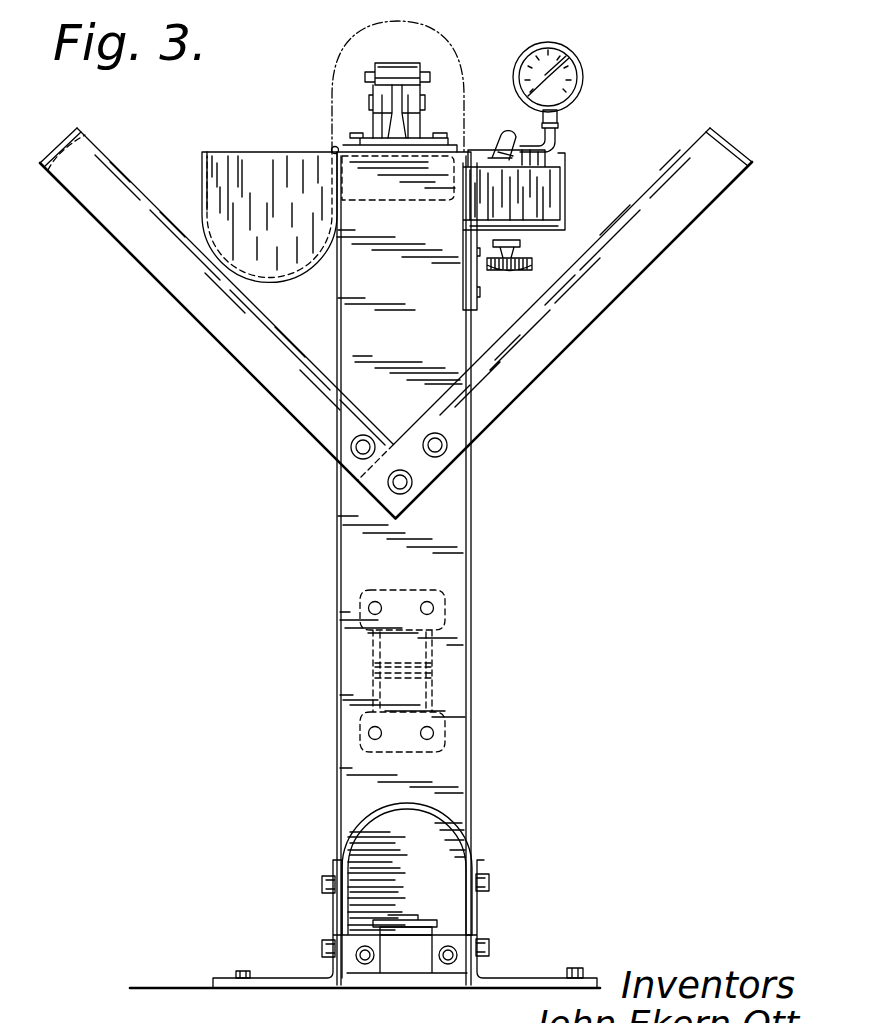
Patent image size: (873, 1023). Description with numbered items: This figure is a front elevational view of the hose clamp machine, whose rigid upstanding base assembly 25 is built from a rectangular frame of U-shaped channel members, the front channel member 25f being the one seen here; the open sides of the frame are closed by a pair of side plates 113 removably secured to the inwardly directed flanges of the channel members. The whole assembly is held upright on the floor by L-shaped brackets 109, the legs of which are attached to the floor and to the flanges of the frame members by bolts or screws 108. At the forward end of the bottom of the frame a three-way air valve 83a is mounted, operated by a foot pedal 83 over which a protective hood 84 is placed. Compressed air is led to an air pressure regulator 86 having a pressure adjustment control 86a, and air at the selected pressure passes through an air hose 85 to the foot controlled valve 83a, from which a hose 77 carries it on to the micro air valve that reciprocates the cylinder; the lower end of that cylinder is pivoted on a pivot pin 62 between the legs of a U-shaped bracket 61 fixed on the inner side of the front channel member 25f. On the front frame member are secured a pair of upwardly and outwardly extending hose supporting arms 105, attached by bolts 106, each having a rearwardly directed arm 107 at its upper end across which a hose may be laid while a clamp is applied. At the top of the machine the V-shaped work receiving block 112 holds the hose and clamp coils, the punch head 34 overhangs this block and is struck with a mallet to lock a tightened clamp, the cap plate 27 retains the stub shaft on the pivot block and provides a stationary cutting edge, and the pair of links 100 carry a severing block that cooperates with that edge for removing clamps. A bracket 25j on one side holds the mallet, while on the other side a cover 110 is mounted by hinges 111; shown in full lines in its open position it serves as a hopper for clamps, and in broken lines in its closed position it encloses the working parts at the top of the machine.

The base assembly 25 is at (474, 520).
The front channel member 25f is at (424, 343).
The bracket 25j is at (563, 198).
The cap plate 27 is at (410, 50).
The punch head 34 is at (397, 98).
The U-shaped bracket 61 is at (445, 690).
The pivot pin 62 is at (414, 666).
The hose 77 is at (455, 960).
The foot pedal 83 is at (416, 919).
The three-way air valve 83a is at (409, 972).
The protective hood 84 is at (363, 822).
The air hose 85 is at (366, 966).
The air pressure regulator 86 is at (566, 121).
The pressure adjustment control 86a is at (518, 244).
The links 100 is at (368, 62).
The hose supporting arms 105 is at (198, 302).
The bolts 106 is at (412, 482).
The rearwardly directed arm 107 is at (70, 170).
The bolts or screws 108 is at (322, 884).
The L-shaped brackets 109 is at (478, 915).
The cover 110 is at (228, 160).
The hinges 111 is at (334, 146).
The work receiving block 112 is at (401, 127).
The side plates 113 is at (340, 588).